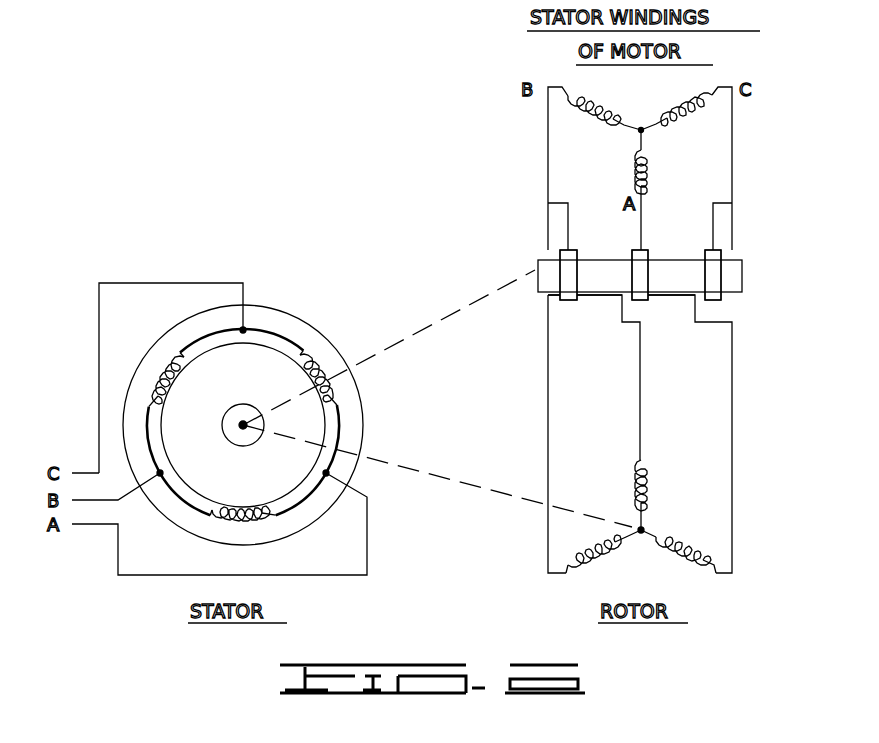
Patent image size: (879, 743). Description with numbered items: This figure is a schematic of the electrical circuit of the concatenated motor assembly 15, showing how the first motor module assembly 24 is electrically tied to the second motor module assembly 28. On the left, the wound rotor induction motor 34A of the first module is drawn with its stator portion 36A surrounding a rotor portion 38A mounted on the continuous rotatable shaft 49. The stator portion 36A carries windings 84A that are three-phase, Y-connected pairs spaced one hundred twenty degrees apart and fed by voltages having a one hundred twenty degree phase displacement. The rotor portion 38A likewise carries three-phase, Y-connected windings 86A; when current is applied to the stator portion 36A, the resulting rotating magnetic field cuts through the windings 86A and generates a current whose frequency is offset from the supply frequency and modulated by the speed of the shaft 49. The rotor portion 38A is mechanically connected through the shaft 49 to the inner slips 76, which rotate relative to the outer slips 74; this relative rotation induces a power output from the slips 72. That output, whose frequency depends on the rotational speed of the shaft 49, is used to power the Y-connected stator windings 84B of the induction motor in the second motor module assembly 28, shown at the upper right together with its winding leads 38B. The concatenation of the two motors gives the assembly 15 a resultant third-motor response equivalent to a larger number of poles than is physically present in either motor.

The concatenated motor assembly 15 is at (268, 125).
The first motor module assembly 24 is at (132, 258).
The second motor module assembly 28 is at (506, 99).
The wound rotor induction motor 34A is at (542, 524).
The stator portion 36A is at (302, 318).
The rotor portion 38A is at (265, 357).
The stator winding leads 38B is at (548, 162).
The continuous rotatable shaft 49 is at (226, 418).
The slips 72 is at (527, 246).
The outer slips 74 is at (574, 252).
The inner slips 76 is at (538, 303).
The windings 84A is at (142, 374).
The stator windings 84B is at (646, 132).
The windings 86A is at (645, 530).